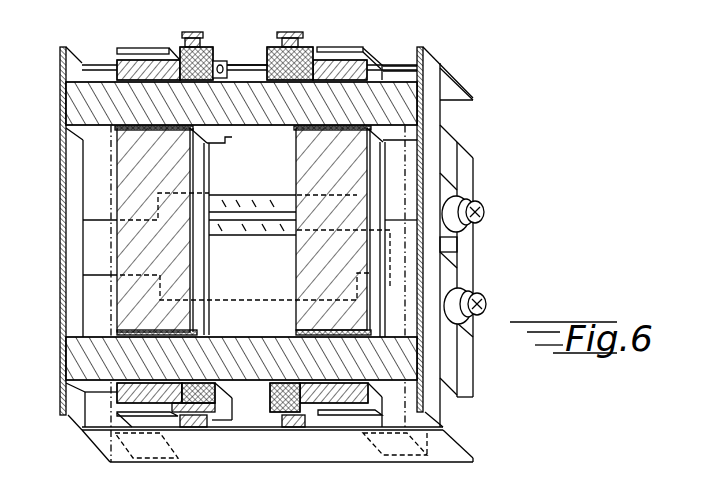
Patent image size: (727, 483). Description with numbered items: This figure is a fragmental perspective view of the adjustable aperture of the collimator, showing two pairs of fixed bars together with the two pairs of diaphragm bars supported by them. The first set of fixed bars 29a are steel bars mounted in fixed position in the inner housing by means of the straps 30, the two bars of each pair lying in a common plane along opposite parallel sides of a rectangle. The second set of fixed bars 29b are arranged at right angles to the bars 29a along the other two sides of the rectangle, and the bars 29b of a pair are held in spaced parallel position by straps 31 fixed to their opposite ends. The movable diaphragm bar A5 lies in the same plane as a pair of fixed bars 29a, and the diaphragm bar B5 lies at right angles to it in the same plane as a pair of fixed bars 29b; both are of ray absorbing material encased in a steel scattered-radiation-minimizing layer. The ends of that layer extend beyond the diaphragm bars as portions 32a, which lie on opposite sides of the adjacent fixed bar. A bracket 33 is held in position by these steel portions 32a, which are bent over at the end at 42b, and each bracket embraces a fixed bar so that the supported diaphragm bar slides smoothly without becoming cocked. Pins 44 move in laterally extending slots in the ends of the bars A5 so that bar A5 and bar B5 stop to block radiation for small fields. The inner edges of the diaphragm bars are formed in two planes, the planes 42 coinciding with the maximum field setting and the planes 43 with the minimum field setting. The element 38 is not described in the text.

The first set of fixed bars 29a is at (241, 231).
The second set of fixed bars 29b is at (392, 70).
The straps 30 is at (432, 118).
The straps 31 is at (97, 65).
The extended end portions of the layer 32a is at (228, 143).
The bracket 33 is at (352, 62).
The screw tip 38 is at (228, 68).
The planes 42 is at (284, 226).
The bent-over ends 42b is at (140, 50).
The planes 43 is at (262, 207).
The pins 44 is at (193, 33).
The diaphragm bar A5 is at (241, 231).
The diaphragm bar B5 is at (241, 249).